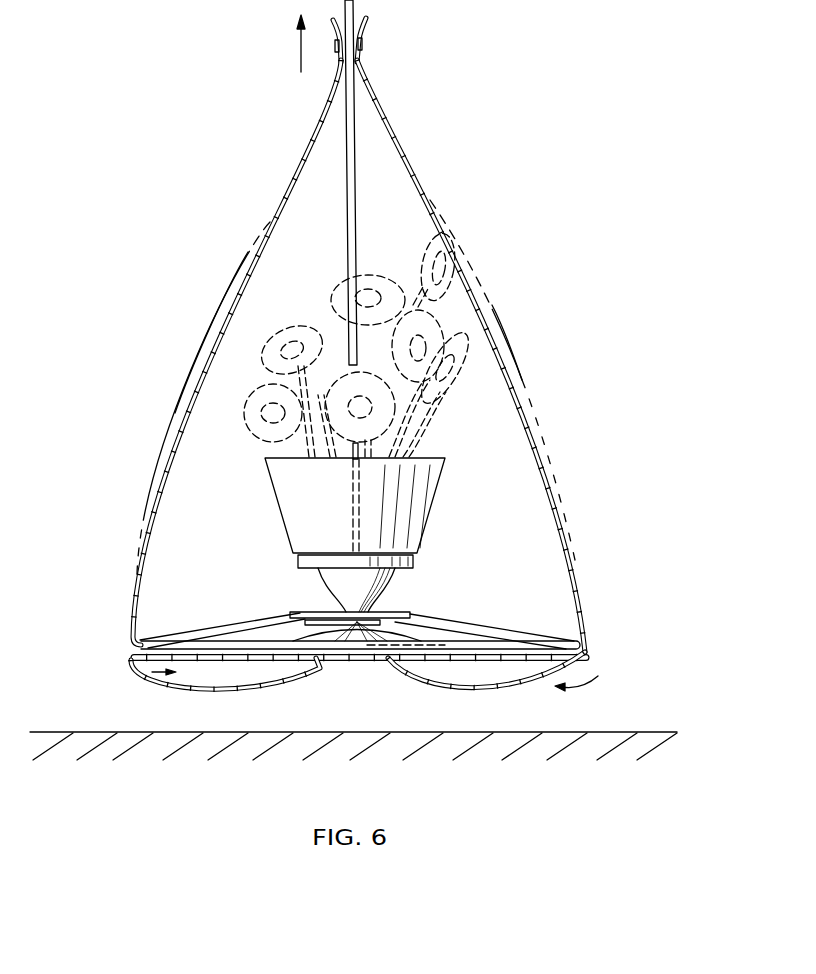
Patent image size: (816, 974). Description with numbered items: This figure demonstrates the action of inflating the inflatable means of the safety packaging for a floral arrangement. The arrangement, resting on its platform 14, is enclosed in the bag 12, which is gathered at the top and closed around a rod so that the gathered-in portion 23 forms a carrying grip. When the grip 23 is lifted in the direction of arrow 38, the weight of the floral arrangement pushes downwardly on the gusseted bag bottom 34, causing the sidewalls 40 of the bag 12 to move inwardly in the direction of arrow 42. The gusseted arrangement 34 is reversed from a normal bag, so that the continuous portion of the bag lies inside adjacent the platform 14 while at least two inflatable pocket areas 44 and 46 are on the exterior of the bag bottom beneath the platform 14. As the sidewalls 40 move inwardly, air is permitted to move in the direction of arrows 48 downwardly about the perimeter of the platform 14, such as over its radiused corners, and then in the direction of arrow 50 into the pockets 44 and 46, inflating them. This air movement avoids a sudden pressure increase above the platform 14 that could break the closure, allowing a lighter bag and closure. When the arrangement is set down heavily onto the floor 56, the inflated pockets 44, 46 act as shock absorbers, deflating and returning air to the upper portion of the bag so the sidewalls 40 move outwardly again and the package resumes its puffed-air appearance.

The bag 12 is at (496, 293).
The platform 14 is at (566, 637).
The gathered-in portion 23 is at (370, 49).
The gusseted bag bottom 34 is at (589, 676).
The arrow 38 is at (300, 50).
The sidewalls 40 is at (414, 195).
The arrow 42 is at (508, 328).
The inflatable pocket area 44 is at (244, 680).
The inflatable pocket area 46 is at (493, 676).
The arrows 48 is at (158, 628).
The arrow 50 is at (155, 680).
The floor 56 is at (378, 733).